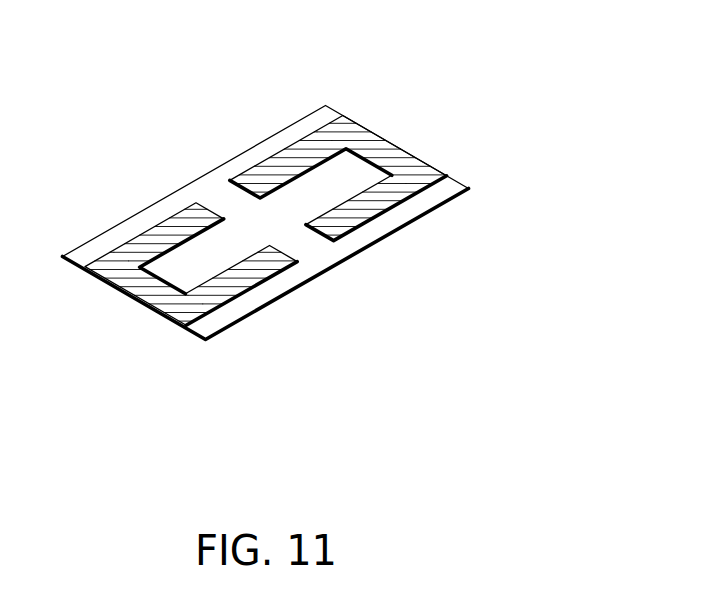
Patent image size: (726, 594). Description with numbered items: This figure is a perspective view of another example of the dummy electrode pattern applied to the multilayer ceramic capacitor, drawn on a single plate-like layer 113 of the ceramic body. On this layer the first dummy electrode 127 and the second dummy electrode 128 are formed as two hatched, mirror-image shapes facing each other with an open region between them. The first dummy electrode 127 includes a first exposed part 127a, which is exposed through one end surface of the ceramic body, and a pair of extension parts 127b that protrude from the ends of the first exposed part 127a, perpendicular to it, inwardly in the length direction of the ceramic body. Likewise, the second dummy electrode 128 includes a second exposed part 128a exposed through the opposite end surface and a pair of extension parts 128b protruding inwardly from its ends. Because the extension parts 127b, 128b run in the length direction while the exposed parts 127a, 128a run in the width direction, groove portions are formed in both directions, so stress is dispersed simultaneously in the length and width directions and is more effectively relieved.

The substrate 113 is at (213, 183).
The first dummy electrode 127 is at (180, 342).
The first exposed part 127a is at (142, 285).
The extension parts 127b is at (242, 340).
The second dummy electrode 128 is at (338, 120).
The second exposed part 128a is at (383, 150).
The extension parts 128b is at (290, 117).